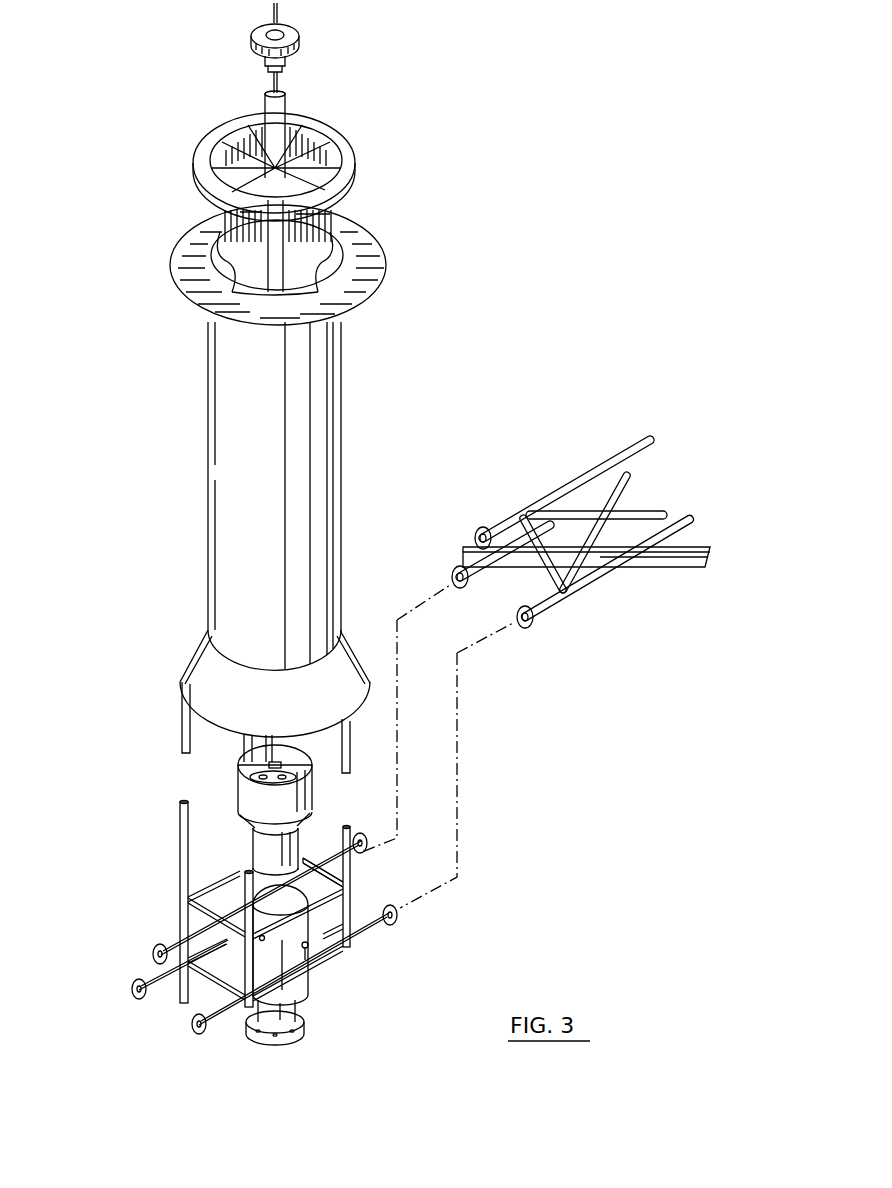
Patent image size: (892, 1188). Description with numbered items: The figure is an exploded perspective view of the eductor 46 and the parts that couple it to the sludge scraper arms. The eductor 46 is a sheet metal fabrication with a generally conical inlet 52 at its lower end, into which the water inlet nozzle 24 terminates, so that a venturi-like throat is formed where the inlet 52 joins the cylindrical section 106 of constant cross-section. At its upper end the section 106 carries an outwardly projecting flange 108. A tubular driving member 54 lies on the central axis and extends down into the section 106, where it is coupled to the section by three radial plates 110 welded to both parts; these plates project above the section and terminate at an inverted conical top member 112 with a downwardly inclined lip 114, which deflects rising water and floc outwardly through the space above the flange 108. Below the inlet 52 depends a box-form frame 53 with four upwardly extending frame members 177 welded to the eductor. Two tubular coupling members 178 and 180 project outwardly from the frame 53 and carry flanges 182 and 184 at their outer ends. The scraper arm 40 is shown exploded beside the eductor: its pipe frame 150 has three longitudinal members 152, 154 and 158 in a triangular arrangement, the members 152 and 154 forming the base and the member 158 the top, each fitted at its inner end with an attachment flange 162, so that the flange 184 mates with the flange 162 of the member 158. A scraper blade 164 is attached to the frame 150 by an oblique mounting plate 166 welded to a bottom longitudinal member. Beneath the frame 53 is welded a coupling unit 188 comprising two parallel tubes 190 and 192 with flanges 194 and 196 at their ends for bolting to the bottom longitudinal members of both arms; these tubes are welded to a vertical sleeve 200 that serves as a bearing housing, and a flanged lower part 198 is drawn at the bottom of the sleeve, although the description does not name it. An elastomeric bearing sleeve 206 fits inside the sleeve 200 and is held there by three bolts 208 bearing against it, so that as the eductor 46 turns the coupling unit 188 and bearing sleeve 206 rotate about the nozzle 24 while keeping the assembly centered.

The nozzle 24 is at (326, 787).
The scraper arm 40 is at (593, 538).
The eductor 46 is at (288, 262).
The conical inlet 52 is at (210, 662).
The frame 53 is at (268, 936).
The tubular driving member 54 is at (284, 107).
The cylindrical section 106 is at (208, 437).
The flange 108 is at (372, 256).
The plates 110 is at (300, 250).
The top member 112 is at (323, 170).
The lip 114 is at (337, 197).
The frame 150 is at (593, 517).
The longitudinal member 152 is at (497, 570).
The longitudinal member 154 is at (538, 607).
The longitudinal member 158 is at (614, 455).
The attachment flange 162 is at (448, 575).
The scraper blade 164 is at (604, 575).
The mounting plate 166 is at (652, 566).
The frame members 177 is at (180, 823).
The tubular coupling member 178 is at (173, 942).
The tubular coupling member 180 is at (346, 864).
The flange 182 is at (154, 950).
The flange 184 is at (372, 848).
The coupling unit 188 is at (320, 978).
The tube 190 is at (165, 988).
The tube 192 is at (372, 935).
The flange 194 is at (134, 993).
The flange 196 is at (206, 1034).
The pipe flange 198 is at (305, 1040).
The sleeve 200 is at (315, 978).
The bearing sleeve 206 is at (272, 842).
The bolts 208 is at (316, 940).